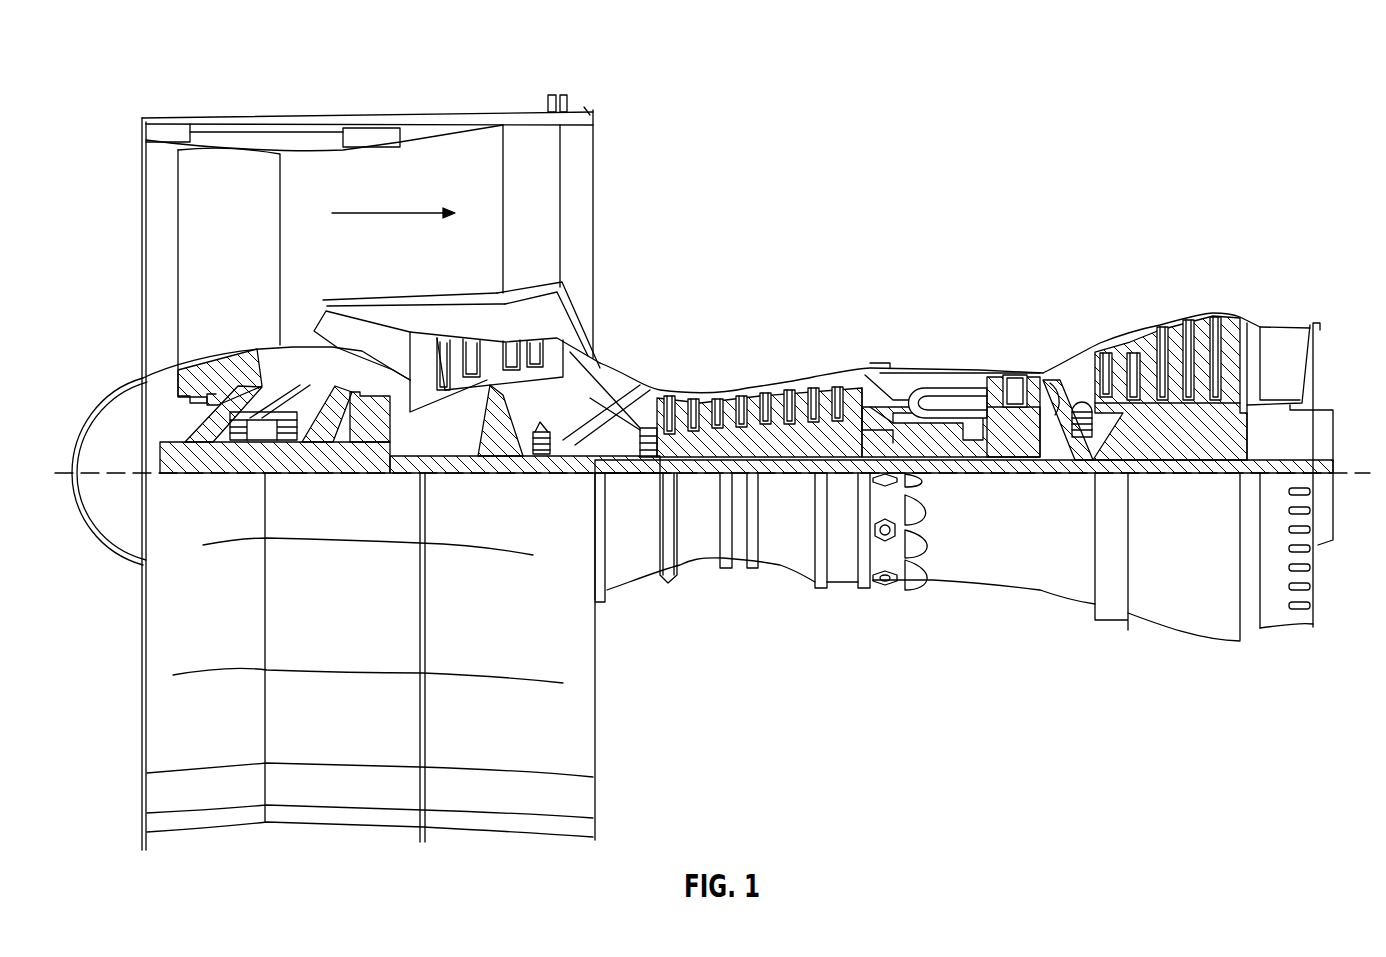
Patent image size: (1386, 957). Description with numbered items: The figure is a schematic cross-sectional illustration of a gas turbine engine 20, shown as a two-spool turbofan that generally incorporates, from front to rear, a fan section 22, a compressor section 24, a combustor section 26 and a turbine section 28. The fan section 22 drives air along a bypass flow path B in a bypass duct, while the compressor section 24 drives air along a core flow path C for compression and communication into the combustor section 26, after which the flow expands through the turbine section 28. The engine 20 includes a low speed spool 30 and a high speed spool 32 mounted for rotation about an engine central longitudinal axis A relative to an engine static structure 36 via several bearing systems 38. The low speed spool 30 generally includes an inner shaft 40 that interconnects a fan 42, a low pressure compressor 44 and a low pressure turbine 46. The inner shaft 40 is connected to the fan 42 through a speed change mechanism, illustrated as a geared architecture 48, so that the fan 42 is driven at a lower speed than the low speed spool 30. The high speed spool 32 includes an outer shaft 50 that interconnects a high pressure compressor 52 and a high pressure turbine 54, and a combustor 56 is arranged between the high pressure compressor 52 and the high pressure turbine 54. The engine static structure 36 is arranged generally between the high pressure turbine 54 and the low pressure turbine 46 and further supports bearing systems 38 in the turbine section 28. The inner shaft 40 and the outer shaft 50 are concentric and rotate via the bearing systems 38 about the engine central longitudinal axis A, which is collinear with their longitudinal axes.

The gas turbine engine 20 is at (1143, 157).
The fan section 22 is at (243, 104).
The compressor section 24 is at (716, 368).
The combustor section 26 is at (948, 360).
The turbine section 28 is at (1186, 445).
The low speed spool 30 is at (801, 478).
The high speed spool 32 is at (857, 427).
The engine static structure 36 is at (843, 590).
The bearing systems 38 is at (243, 440).
The inner shaft 40 is at (610, 463).
The fan 42 is at (253, 245).
The low pressure compressor 44 is at (517, 350).
The low pressure turbine 46 is at (1176, 330).
The geared architecture 48 is at (372, 440).
The outer shaft 50 is at (967, 470).
The high pressure compressor 52 is at (770, 437).
The high pressure turbine 54 is at (1020, 373).
The combustor 56 is at (944, 395).
The engine central longitudinal axis A is at (1337, 467).
The bypass flow path B is at (396, 210).
The core flow path C is at (325, 337).